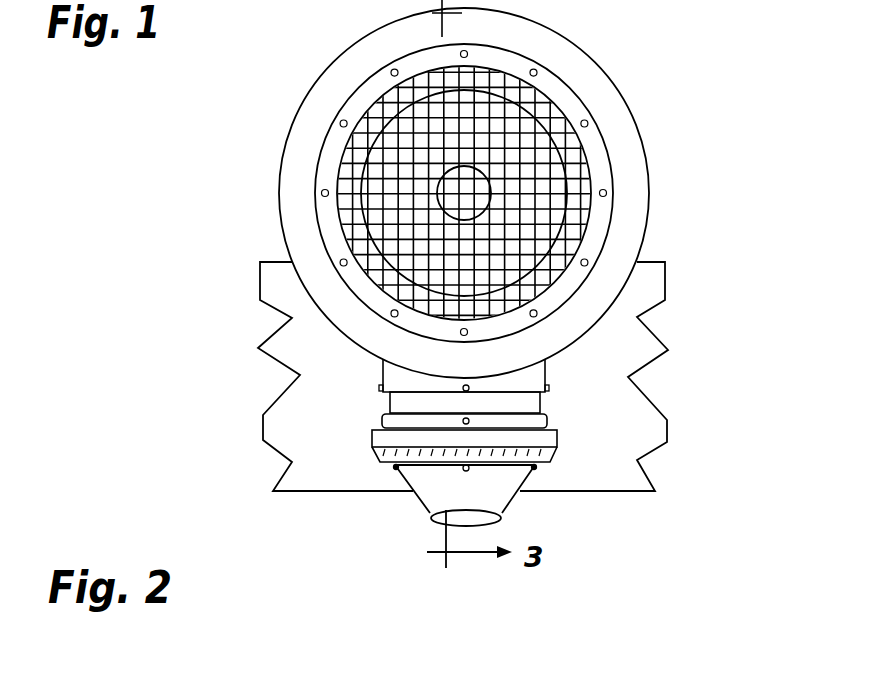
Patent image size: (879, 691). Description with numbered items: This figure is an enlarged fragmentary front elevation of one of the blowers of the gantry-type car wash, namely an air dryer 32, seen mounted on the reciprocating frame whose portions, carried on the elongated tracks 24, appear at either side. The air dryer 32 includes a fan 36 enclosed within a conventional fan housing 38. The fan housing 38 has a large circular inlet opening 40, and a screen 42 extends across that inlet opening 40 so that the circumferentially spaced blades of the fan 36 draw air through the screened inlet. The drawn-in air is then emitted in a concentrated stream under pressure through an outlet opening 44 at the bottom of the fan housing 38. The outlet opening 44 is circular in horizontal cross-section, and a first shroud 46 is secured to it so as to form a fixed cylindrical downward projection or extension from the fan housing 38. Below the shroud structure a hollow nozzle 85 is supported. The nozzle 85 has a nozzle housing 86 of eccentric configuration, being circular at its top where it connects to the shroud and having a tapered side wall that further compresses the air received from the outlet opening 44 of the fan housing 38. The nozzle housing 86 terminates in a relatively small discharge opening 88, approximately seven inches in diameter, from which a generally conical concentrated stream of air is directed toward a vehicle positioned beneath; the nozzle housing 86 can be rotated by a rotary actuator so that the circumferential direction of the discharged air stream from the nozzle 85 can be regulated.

The elongated tracks 24 is at (501, 245).
The air dryer 32 is at (692, 99).
The fan 36 is at (636, 104).
The fan housing 38 is at (631, 192).
The inlet opening 40 is at (558, 242).
The screen 42 is at (568, 247).
The outlet opening 44 is at (548, 362).
The first shroud 46 is at (520, 402).
The hollow nozzle 85 is at (499, 527).
The nozzle housing 86 is at (498, 480).
The discharge opening 88 is at (470, 518).